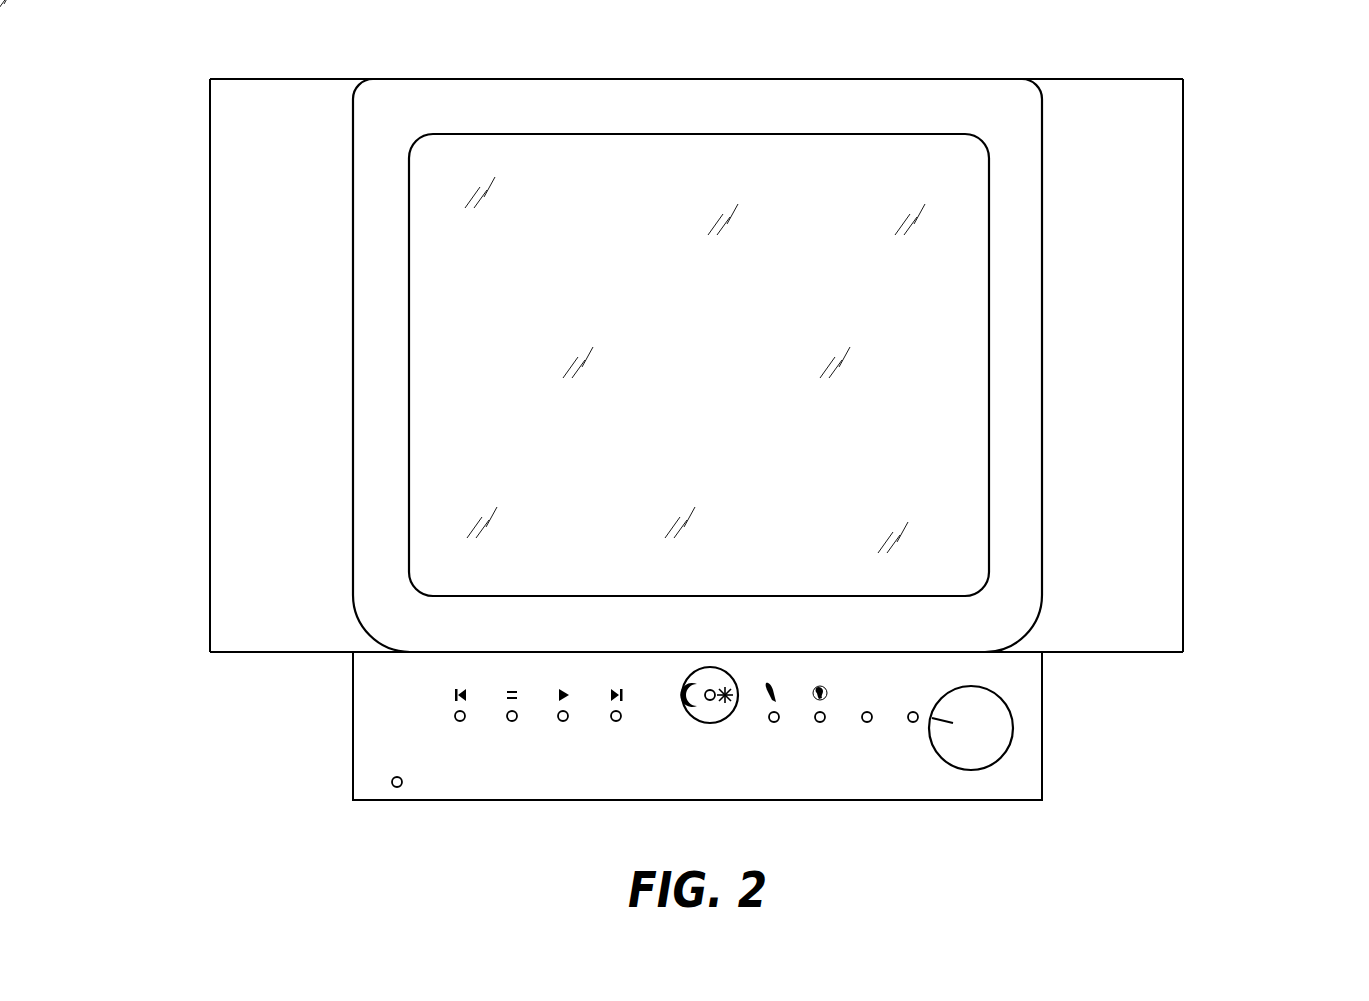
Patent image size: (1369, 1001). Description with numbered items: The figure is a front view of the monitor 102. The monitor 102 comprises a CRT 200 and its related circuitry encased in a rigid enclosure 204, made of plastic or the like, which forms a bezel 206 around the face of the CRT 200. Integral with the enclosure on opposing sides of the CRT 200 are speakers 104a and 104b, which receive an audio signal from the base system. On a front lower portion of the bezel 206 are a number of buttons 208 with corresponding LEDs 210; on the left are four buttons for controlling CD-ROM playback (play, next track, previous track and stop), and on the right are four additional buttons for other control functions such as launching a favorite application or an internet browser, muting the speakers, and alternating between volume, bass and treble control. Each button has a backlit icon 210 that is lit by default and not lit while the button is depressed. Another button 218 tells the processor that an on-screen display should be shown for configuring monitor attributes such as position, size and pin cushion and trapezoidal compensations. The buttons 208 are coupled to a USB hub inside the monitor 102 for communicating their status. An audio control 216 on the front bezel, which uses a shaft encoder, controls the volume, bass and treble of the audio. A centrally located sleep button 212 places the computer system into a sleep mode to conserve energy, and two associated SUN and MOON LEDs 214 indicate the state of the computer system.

The monitor 102 is at (1234, 91).
The speaker 104a is at (208, 372).
The speaker 104b is at (1185, 370).
The CRT 200 is at (860, 152).
The enclosure 204 is at (765, 78).
The bezel 206 is at (1032, 692).
The buttons 208 is at (458, 719).
The LEDs 210 is at (455, 695).
The sleep button 212 is at (710, 700).
The SUN and MOON LEDs 214 is at (728, 680).
The audio control 216 is at (968, 770).
The OSD button 218 is at (396, 788).